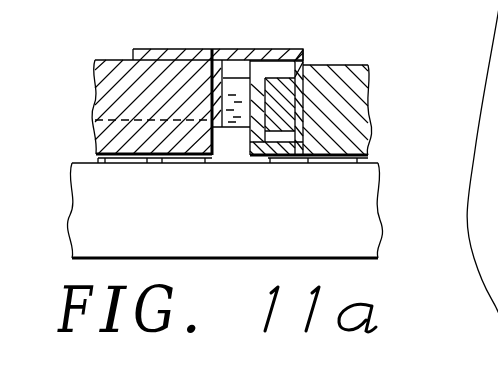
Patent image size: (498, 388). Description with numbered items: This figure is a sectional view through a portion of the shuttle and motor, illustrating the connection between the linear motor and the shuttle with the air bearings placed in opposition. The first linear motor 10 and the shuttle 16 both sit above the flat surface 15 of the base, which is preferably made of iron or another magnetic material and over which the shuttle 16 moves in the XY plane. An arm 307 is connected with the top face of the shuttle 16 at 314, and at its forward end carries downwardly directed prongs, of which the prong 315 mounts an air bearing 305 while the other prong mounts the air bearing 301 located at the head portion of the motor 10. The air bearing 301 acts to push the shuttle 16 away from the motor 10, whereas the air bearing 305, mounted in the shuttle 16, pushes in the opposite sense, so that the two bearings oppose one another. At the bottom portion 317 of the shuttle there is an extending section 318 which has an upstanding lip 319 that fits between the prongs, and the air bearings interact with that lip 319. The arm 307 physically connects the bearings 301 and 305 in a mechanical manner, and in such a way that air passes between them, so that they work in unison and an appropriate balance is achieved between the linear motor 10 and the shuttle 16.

The first linear motor 10 is at (96, 131).
The connection point of the arm to the shuttle top face 314 is at (141, 73).
The prong 315 is at (200, 78).
The air bearing 301 is at (237, 78).
The arm 307 is at (285, 30).
The air bearing 305 is at (296, 105).
The shuttle 16 is at (372, 84).
The flat surface 15 is at (382, 229).
The upstanding lip 319 is at (251, 130).
The bottom portion of the shuttle 317 is at (308, 164).
The extending section 318 is at (267, 165).